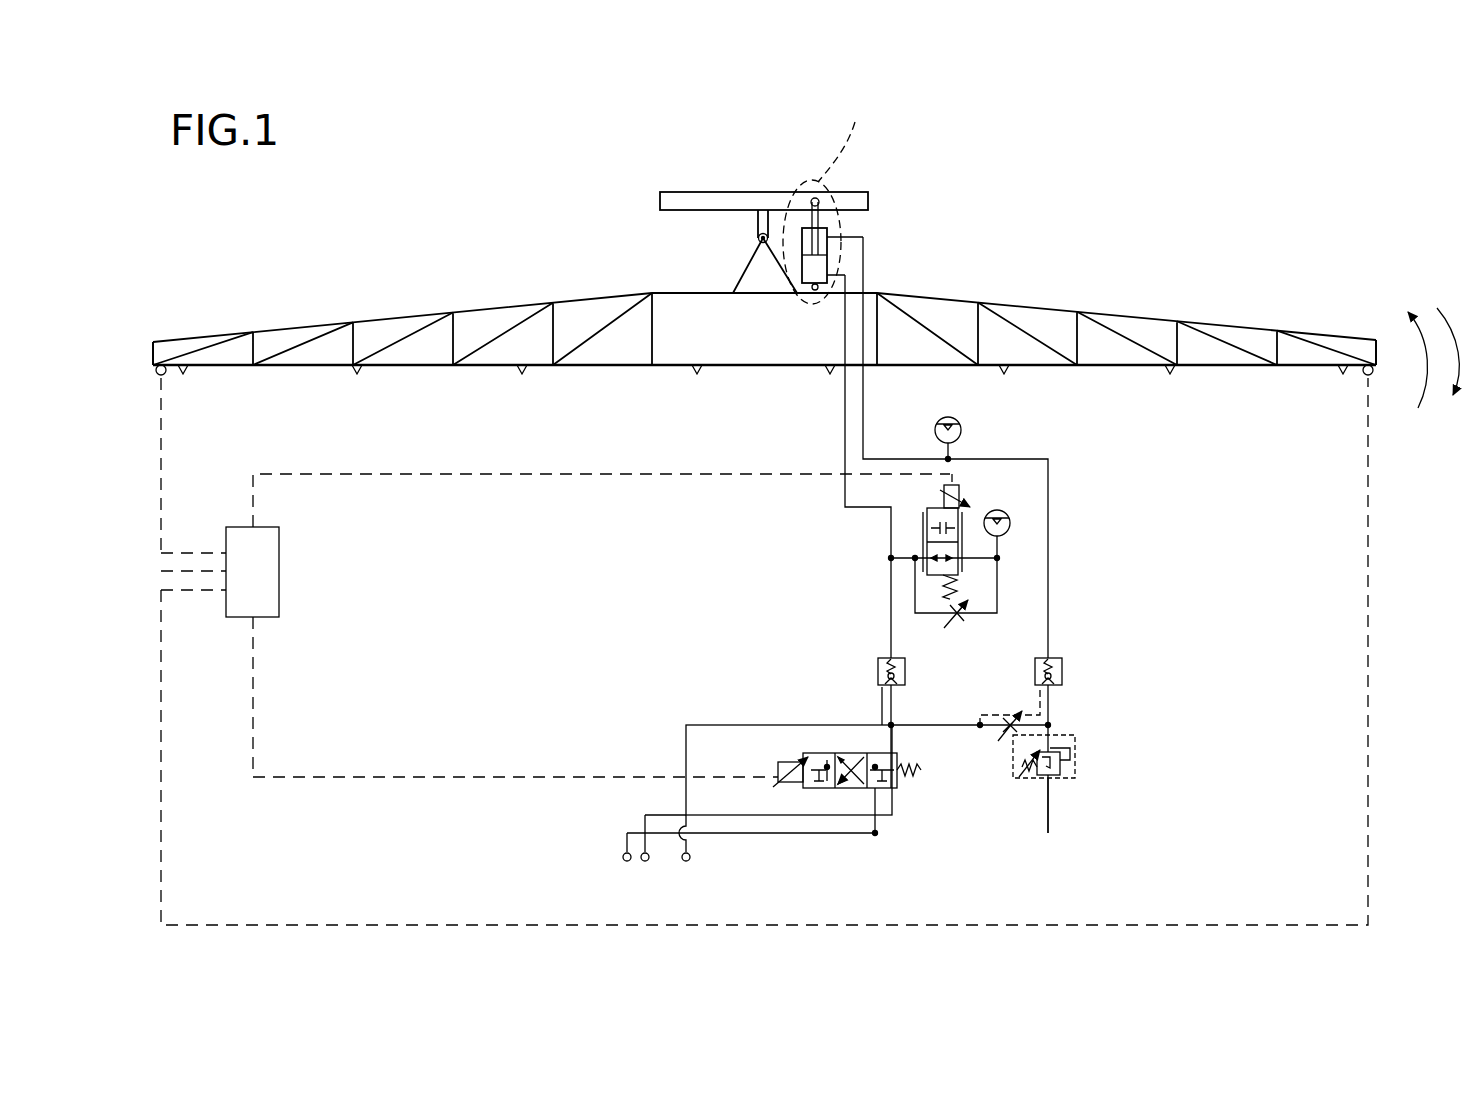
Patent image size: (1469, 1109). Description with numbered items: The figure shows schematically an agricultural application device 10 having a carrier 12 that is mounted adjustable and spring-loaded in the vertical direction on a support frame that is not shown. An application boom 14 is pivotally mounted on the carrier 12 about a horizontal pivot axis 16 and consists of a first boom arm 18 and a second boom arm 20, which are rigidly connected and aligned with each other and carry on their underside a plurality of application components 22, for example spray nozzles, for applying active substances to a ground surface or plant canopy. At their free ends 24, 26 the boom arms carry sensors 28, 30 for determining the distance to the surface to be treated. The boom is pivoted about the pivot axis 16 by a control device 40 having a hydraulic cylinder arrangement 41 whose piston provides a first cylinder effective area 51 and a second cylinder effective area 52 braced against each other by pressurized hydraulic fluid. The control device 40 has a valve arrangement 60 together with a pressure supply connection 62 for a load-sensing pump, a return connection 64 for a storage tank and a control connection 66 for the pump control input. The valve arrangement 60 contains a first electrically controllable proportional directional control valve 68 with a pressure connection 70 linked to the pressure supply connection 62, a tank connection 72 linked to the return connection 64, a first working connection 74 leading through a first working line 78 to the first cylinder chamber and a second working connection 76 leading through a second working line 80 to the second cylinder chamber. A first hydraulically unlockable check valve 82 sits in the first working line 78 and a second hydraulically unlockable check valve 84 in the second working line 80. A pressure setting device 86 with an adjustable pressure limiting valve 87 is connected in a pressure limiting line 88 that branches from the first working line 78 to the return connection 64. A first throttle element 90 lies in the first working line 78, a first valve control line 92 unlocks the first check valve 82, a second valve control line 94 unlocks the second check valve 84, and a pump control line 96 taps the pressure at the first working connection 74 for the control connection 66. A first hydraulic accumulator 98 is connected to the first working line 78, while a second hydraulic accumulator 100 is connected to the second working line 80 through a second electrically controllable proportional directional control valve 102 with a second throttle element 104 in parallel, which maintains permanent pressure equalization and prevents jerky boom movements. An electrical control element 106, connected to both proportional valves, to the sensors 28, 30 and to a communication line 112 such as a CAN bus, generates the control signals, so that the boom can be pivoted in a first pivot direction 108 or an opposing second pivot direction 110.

The agricultural application device 10 is at (1153, 228).
The carrier 12 is at (660, 201).
The application boom 14 is at (764, 276).
The horizontal pivot axis 16 is at (757, 239).
The first boom arm 18 is at (1200, 322).
The second boom arm 20 is at (275, 325).
The application components 22 is at (1313, 395).
The free end 24 is at (1375, 338).
The free end 26 is at (152, 340).
The sensor 28 is at (1374, 376).
The sensor 30 is at (155, 378).
The control device 40 is at (705, 466).
The hydraulic cylinder arrangement 41 is at (898, 229).
The first cylinder effective area 51 is at (835, 228).
The second cylinder effective area 52 is at (830, 262).
The valve arrangement 60 is at (612, 719).
The pressure supply connection 62 is at (645, 862).
The return connection 64 is at (622, 862).
The control connection 66 is at (689, 862).
The first electrically controllable proportional directional control valve 68 is at (820, 752).
The pressure connection 70 is at (897, 792).
The tank connection 72 is at (870, 792).
The first working connection 74 is at (855, 752).
The second working connection 76 is at (898, 752).
The first working line 78 is at (1049, 592).
The second working line 80 is at (868, 509).
The first hydraulically unlockable check valve 82 is at (1063, 670).
The second hydraulically unlockable check valve 84 is at (878, 665).
The pressure setting device 86 is at (1111, 740).
The pressure limiting valve 87 is at (1062, 779).
The pressure limiting line 88 is at (1050, 806).
The first throttle element 90 is at (1008, 736).
The first valve control line 92 is at (981, 712).
The second valve control line 94 is at (876, 722).
The pump control line 96 is at (703, 724).
The first hydraulic accumulator 98 is at (938, 420).
The second hydraulic accumulator 100 is at (1009, 517).
The second electrically controllable proportional directional control valve 102 is at (942, 496).
The second throttle element 104 is at (955, 616).
The electrical control element 106 is at (266, 562).
The first pivot direction 108 is at (1455, 380).
The second pivot direction 110 is at (1460, 340).
The communication line 112 is at (172, 571).